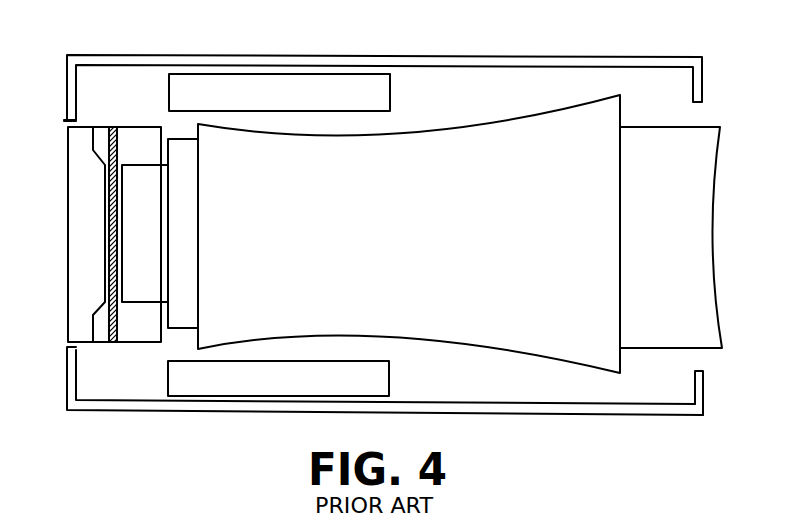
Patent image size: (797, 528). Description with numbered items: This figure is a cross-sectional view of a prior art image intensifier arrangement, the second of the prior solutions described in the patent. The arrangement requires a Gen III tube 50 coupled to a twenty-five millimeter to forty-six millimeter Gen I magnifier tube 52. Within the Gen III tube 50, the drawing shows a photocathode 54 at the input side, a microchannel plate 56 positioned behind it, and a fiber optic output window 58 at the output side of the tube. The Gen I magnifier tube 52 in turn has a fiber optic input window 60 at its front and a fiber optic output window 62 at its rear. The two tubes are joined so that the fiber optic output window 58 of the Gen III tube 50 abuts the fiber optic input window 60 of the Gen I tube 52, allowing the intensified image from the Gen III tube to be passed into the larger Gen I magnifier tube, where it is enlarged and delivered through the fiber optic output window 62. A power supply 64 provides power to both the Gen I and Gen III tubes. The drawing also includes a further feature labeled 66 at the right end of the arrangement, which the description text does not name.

The Gen III tube 50 is at (86, 344).
The Gen I magnifier tube 52 is at (551, 345).
The photocathode 54 is at (76, 238).
The microchannel plate 56 is at (110, 319).
The fiber optic output window 58 is at (147, 297).
The fiber optic input window 60 is at (182, 147).
The fiber optic output window 62 is at (702, 169).
The power supply 64 is at (380, 87).
The housing end flange 66 is at (705, 392).